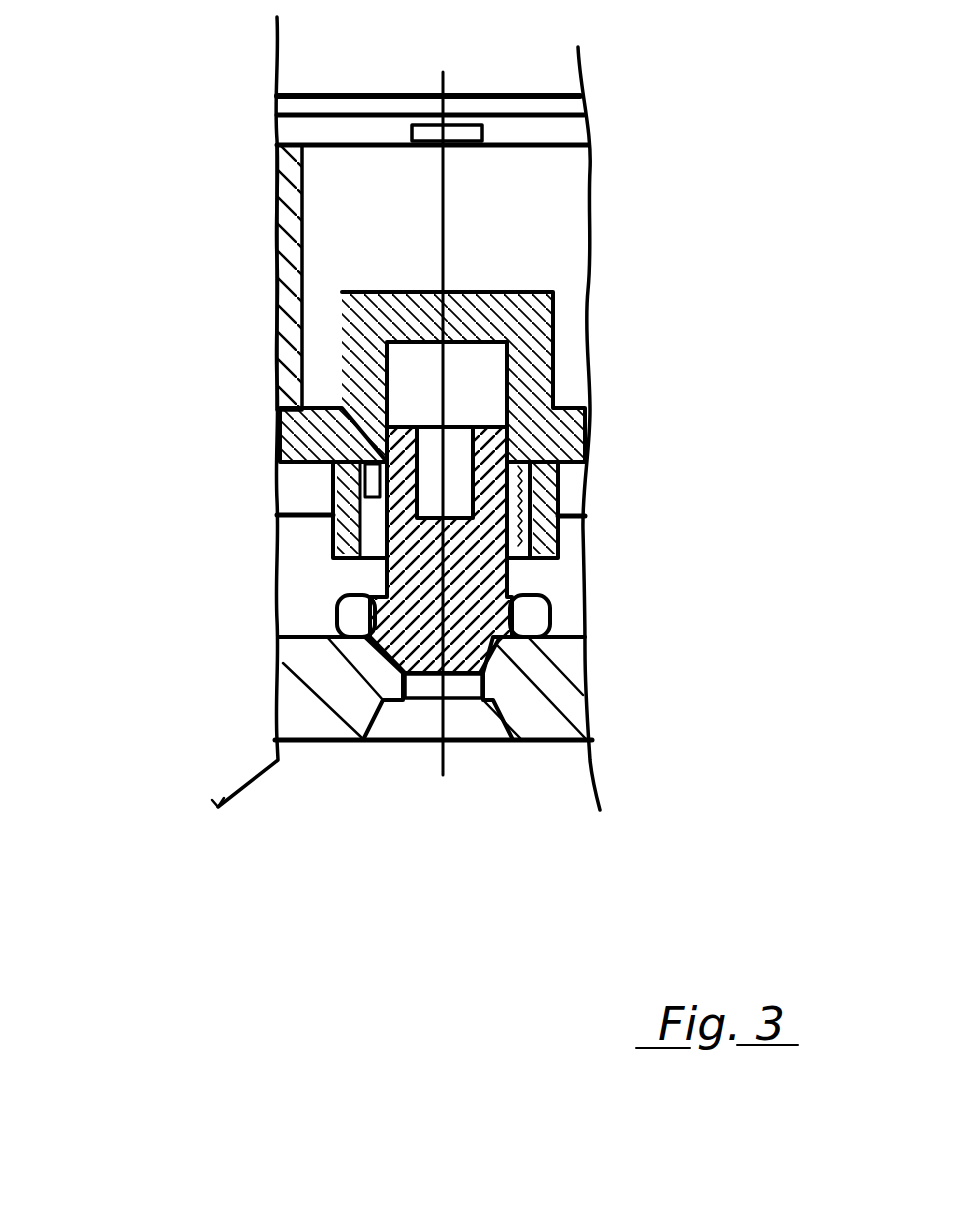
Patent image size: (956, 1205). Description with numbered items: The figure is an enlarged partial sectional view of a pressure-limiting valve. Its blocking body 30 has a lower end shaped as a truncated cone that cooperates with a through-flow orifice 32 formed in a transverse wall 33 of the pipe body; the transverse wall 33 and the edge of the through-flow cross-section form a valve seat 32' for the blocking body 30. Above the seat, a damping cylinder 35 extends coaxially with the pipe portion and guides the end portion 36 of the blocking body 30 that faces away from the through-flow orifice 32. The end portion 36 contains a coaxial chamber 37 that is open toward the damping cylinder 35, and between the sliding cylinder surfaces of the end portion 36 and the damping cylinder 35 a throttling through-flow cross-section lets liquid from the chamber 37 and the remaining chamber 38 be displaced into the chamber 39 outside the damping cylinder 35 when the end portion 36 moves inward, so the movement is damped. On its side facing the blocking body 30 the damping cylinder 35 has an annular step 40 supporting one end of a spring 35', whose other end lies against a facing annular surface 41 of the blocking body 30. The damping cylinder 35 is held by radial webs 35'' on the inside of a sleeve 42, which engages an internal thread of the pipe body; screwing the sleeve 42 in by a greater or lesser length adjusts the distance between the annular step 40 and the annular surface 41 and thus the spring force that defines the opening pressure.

The blocking body 30 is at (597, 686).
The through-flow orifice 32 is at (494, 809).
The valve seat 32' is at (423, 772).
The transverse wall 33 is at (315, 717).
The damping cylinder 35 is at (531, 445).
The spring 35' is at (622, 519).
The radial webs 35'' is at (256, 338).
The end portion 36 is at (560, 486).
The chamber 37 is at (458, 460).
The remaining chamber 38 is at (470, 378).
The chamber outside the damping cylinder 39 is at (558, 583).
The annular step 40 is at (375, 493).
The annular surface 41 is at (343, 608).
The sleeve 42 is at (308, 208).